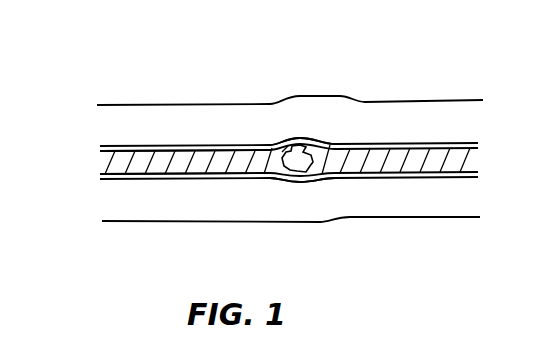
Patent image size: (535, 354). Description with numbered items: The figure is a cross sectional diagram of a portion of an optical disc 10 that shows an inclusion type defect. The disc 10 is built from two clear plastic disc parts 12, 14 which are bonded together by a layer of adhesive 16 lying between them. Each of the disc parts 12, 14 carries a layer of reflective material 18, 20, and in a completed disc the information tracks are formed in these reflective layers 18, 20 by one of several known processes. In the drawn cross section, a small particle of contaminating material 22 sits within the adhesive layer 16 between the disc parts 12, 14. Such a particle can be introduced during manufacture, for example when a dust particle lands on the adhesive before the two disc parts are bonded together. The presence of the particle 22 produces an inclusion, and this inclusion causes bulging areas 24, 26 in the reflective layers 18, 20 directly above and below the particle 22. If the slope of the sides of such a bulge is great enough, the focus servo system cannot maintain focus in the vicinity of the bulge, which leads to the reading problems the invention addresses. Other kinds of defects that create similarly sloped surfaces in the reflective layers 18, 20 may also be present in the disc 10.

The optical disc 10 is at (425, 95).
The disc part 12 is at (162, 116).
The disc part 14 is at (125, 212).
The layer of adhesive 16 is at (122, 157).
The layer of reflective material 18 is at (246, 148).
The layer of reflective material 20 is at (243, 180).
The particle of contaminating material 22 is at (299, 163).
The bulging area 24 is at (297, 138).
The bulging area 26 is at (310, 182).